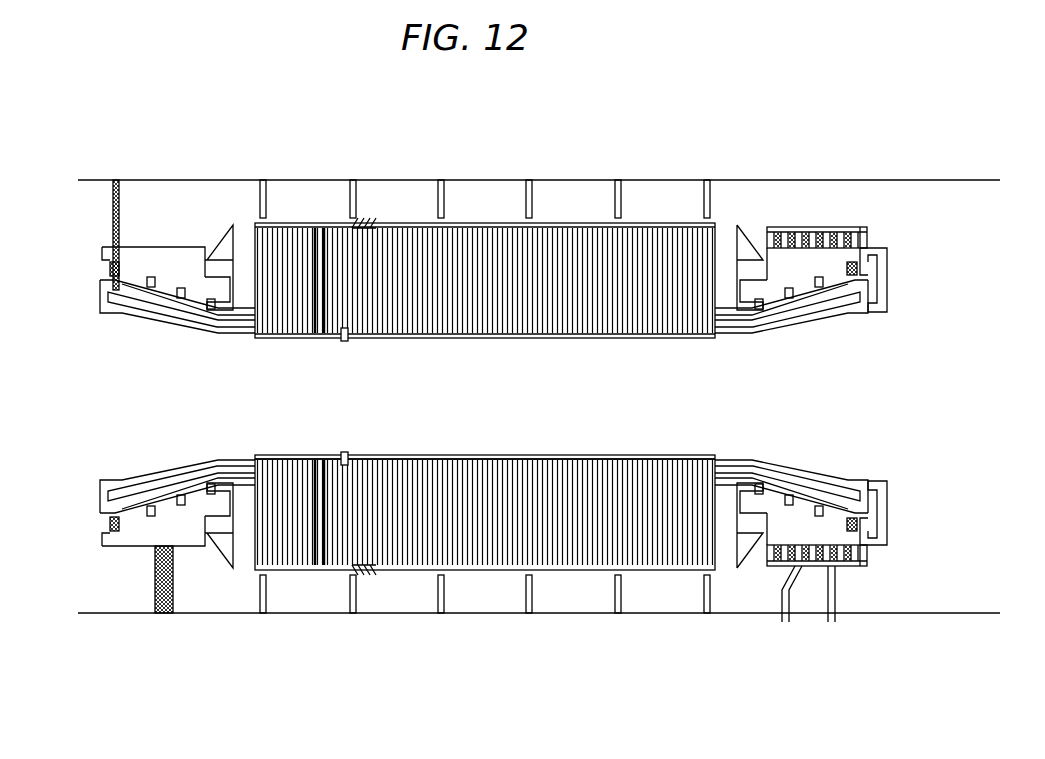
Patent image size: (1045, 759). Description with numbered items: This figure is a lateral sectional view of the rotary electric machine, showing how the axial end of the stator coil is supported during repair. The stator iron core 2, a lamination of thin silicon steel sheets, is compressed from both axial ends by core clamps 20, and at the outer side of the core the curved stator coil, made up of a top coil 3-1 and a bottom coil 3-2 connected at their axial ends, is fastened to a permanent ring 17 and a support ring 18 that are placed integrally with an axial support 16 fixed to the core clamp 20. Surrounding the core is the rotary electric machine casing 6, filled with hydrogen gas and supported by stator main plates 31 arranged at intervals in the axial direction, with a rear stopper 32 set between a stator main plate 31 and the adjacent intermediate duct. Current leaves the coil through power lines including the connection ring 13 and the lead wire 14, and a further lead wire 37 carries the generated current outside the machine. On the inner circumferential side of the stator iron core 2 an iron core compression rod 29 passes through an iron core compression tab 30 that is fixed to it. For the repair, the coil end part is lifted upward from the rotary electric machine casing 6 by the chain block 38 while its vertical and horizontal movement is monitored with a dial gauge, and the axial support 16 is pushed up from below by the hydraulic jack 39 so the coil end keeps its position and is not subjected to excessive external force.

The stator iron core 2 is at (468, 243).
The top coil 3-1 is at (830, 310).
The bottom coil 3-2 is at (800, 320).
The rotary electric machine casing 6 is at (305, 182).
The connection ring 13 is at (823, 245).
The lead wire 14 is at (880, 265).
The axial support 16 is at (178, 262).
The permanent ring 17 is at (865, 270).
The support ring 18 is at (760, 322).
The core clamp 20 is at (243, 235).
The iron core compression rod 29 is at (568, 455).
The iron core compression tab 30 is at (345, 452).
The stator main plate 31 is at (538, 192).
The rear stopper 32 is at (365, 222).
The lead wire 37 is at (835, 612).
The chain block 38 is at (116, 215).
The hydraulic jack 39 is at (152, 585).